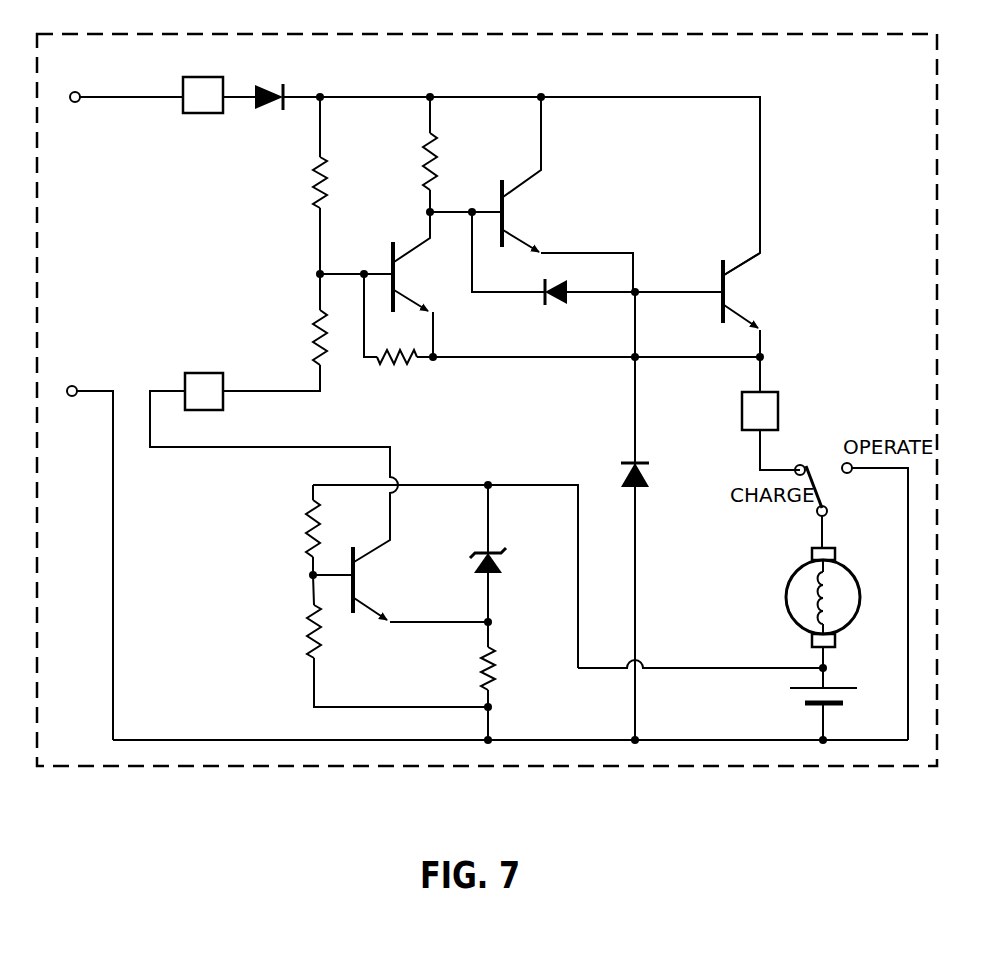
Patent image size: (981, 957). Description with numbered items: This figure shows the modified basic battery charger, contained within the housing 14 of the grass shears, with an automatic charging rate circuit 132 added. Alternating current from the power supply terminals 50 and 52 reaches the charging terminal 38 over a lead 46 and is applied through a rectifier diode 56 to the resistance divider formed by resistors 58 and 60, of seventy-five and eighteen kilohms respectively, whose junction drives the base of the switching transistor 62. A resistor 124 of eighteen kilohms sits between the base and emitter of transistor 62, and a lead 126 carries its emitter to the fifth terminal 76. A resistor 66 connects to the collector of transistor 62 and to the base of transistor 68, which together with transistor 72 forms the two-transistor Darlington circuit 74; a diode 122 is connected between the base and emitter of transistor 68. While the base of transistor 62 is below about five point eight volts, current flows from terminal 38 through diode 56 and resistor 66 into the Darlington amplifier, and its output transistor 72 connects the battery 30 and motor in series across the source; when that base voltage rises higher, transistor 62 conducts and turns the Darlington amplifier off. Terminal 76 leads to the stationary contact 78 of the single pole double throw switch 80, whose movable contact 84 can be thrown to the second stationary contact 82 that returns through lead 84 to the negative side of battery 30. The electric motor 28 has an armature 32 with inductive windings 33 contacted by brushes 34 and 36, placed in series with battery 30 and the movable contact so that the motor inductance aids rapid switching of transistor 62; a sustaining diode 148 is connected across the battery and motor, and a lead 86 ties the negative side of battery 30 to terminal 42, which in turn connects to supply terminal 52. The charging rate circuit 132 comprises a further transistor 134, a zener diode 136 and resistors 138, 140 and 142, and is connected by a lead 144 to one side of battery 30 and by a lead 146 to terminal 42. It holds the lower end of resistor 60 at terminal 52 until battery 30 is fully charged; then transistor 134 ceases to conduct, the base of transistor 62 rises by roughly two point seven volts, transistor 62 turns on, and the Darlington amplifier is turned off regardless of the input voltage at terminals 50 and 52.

The housing 14 is at (172, 4).
The power supply terminal 50 is at (76, 103).
The lead 46 is at (118, 104).
The terminal 38 is at (210, 112).
The rectifier diode 56 is at (270, 108).
The resistor 58 is at (328, 186).
The resistor 60 is at (329, 326).
The switching transistor 62 is at (372, 252).
The resistor 66 is at (420, 168).
The transistor 68 is at (490, 195).
The Darlington transistor 72 is at (708, 285).
The Darlington circuit 74 is at (772, 192).
The fifth terminal 76 is at (742, 406).
The stationary contact 78 is at (796, 464).
The single pole double throw switch 80 is at (828, 442).
The second stationary contact 82 is at (850, 474).
The movable contact 84 is at (825, 492).
The electric motor 28 is at (822, 599).
The armature 32 is at (860, 598).
The inductive windings 33 is at (815, 604).
The motor brush 34 is at (838, 558).
The motor brush 36 is at (812, 641).
The battery 30 is at (810, 704).
The power supply terminal 52 is at (73, 385).
The lead 86 is at (113, 642).
The terminal 42 is at (208, 372).
The lead 146 is at (212, 448).
The automatic charging rate circuit 132 is at (413, 579).
The transistor 134 is at (342, 560).
The zener diode 136 is at (500, 553).
The resistor 138 is at (305, 520).
The resistor 140 is at (305, 628).
The resistor 142 is at (500, 668).
The lead 144 is at (612, 672).
The sustaining diode 148 is at (650, 490).
The diode 122 is at (552, 304).
The resistor 124 is at (398, 365).
The lead 126 is at (552, 358).